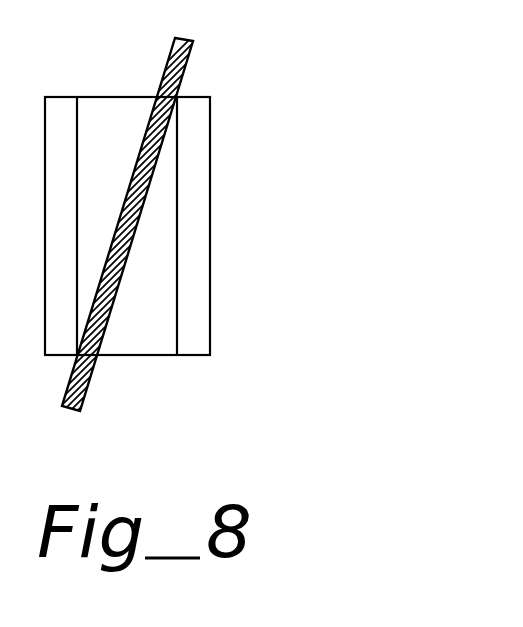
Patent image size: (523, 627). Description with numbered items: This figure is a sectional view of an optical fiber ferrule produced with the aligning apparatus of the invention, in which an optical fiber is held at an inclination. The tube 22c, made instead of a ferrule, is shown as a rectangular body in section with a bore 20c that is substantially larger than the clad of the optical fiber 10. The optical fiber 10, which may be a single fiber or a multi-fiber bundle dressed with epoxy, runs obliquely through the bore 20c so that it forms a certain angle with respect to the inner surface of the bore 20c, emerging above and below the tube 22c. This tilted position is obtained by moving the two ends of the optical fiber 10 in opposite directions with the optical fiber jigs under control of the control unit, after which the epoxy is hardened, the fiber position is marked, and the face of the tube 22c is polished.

The optical fiber 10 is at (168, 63).
The tube 22c is at (203, 182).
The bore 20c is at (145, 337).